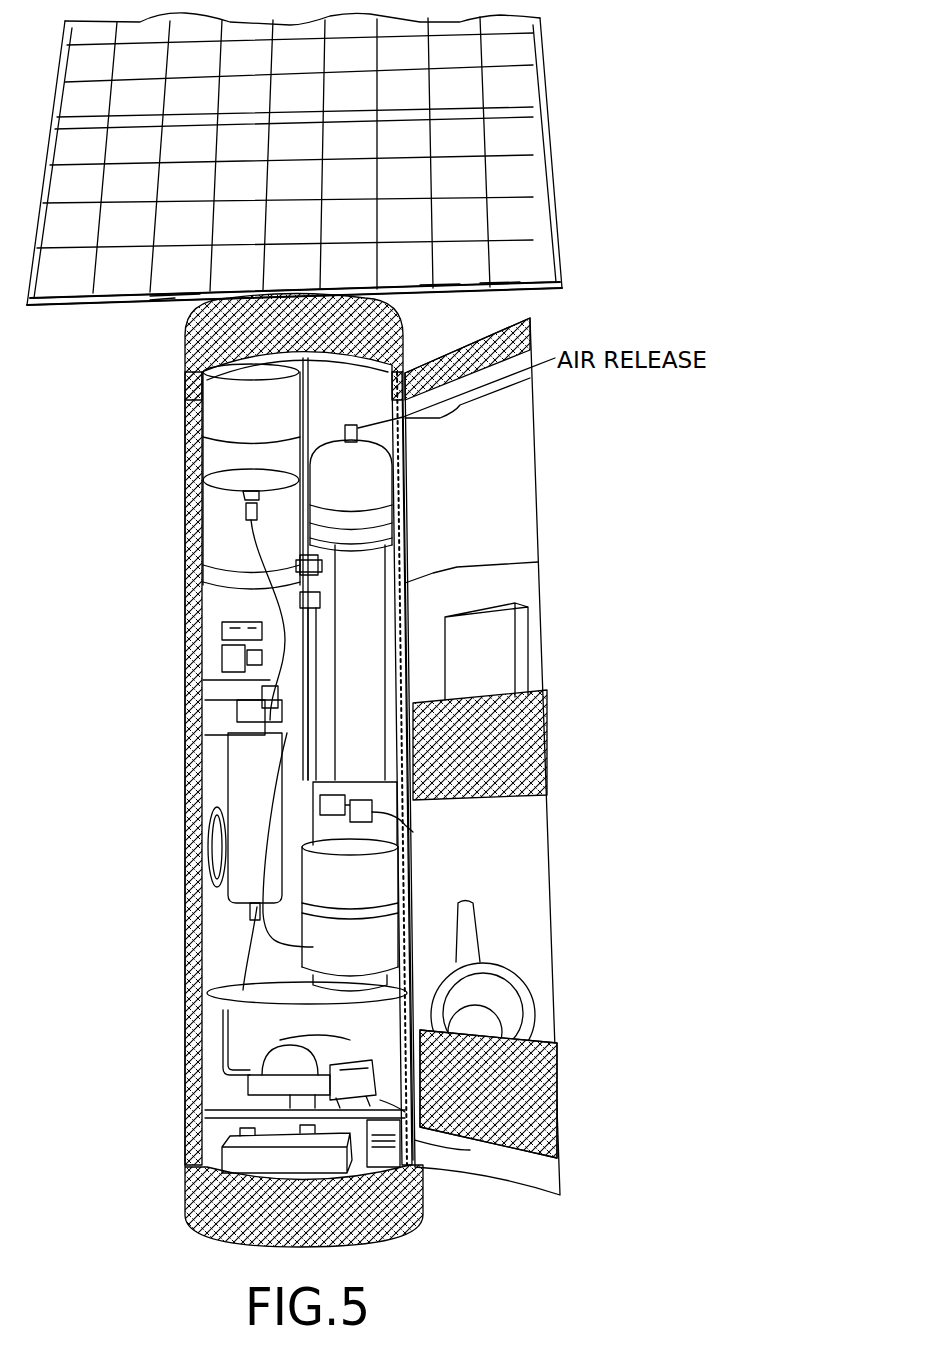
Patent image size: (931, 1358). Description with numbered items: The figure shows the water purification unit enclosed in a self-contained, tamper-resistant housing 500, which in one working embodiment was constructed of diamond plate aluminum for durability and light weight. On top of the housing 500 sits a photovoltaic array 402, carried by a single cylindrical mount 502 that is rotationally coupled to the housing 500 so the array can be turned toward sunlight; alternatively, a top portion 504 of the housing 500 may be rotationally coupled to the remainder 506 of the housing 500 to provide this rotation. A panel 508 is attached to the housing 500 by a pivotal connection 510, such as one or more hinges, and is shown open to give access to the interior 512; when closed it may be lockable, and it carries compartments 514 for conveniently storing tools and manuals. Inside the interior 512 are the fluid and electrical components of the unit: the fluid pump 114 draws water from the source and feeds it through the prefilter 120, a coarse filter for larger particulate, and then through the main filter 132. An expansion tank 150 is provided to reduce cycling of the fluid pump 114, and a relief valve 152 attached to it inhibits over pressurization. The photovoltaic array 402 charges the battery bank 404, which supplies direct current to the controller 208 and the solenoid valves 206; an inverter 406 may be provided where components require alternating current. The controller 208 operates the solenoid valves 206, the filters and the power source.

The photovoltaic array 402 is at (457, 216).
The mount 502 is at (155, 312).
The top portion 504 is at (137, 350).
The remainder 506 is at (403, 330).
The panel 508 is at (168, 545).
The housing 500 is at (192, 1257).
The expansion tank 150 is at (207, 433).
The pivotal connection 510 is at (395, 470).
The main filter 132 is at (340, 556).
The solenoid valves 206 is at (320, 598).
The controller 208 is at (283, 650).
The prefilter 120 is at (243, 808).
The relief valve 152 is at (413, 830).
The interior 512 is at (225, 938).
The fluid pump 114 is at (250, 1078).
The battery bank 404 is at (250, 1142).
The compartments 514 is at (520, 730).
The inverter 406 is at (395, 1110).